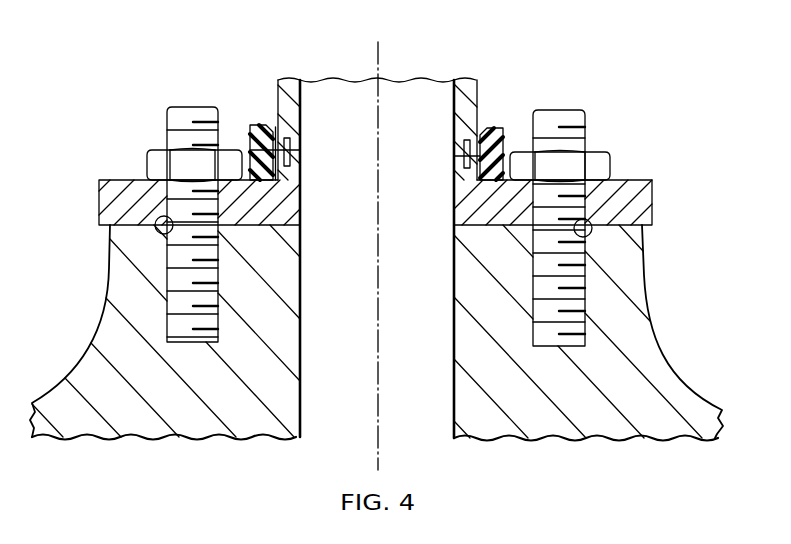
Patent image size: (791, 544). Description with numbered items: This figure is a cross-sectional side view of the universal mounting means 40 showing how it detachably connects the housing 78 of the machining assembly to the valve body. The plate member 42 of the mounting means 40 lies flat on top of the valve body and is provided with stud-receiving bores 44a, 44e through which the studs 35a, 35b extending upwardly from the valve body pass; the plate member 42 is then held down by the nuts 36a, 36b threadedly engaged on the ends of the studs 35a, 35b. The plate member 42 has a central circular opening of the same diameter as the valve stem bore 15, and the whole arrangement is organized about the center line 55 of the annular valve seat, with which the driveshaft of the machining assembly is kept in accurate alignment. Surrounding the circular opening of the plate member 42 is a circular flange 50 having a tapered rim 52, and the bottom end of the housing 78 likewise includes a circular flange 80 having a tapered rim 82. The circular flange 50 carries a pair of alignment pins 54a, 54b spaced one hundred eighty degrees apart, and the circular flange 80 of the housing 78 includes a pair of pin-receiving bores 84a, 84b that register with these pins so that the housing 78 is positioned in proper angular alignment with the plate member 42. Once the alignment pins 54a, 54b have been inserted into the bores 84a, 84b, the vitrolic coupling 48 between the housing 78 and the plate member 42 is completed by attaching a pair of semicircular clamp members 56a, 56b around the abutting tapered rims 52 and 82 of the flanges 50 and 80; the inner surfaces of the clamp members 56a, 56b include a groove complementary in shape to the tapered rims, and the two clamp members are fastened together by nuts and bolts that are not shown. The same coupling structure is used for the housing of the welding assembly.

The universal mounting means 40 is at (104, 169).
The plate member 42 is at (105, 195).
The housing 78 is at (292, 108).
The valve stem bore 15 is at (302, 303).
The center line 55 is at (379, 54).
The stud 35a is at (173, 283).
The stud 35b is at (580, 305).
The nut 36a is at (153, 167).
The nut 36b is at (596, 167).
The stud-receiving bore 44a is at (166, 231).
The stud-receiving bore 44e is at (584, 233).
The semicircular clamp member 56a is at (252, 138).
The semicircular clamp member 56b is at (493, 127).
The tapered rim 82 is at (276, 123).
The vitrolic coupling 48 is at (259, 124).
The pin-receiving bore 84a is at (292, 137).
The pin-receiving bore 84b is at (464, 147).
The alignment pin 54a is at (288, 155).
The alignment pin 54b is at (466, 160).
The circular flange 50 is at (284, 167).
The tapered rim 52 is at (300, 219).
The circular flange 80 is at (460, 152).